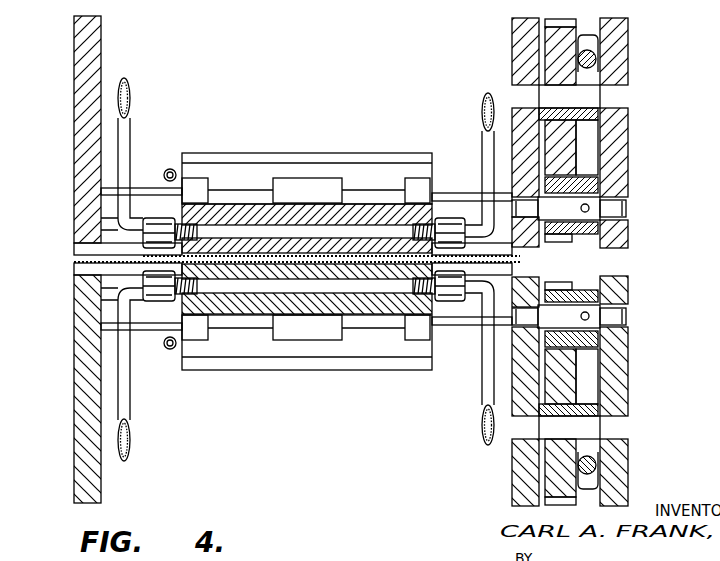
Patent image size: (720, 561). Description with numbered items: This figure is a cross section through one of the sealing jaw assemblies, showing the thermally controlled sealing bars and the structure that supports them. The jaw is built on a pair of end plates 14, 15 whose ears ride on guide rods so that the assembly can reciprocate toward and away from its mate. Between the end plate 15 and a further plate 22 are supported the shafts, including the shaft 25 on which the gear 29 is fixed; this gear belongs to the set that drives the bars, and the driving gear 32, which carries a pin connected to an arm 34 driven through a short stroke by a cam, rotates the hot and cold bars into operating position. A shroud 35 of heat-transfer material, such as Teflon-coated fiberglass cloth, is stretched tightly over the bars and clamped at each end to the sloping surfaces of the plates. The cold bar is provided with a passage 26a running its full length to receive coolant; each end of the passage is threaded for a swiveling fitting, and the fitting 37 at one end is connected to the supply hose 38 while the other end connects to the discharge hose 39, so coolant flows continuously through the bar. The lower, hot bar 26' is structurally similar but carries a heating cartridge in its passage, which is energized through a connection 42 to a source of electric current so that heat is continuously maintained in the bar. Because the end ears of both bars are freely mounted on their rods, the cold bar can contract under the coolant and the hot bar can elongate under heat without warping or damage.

The end plate 14 is at (78, 45).
The end plate 15 is at (626, 57).
The plate 22 is at (512, 45).
The shaft 25 is at (628, 208).
The hot bar 26' is at (307, 261).
The passage 26a is at (348, 232).
The gear 29 is at (570, 236).
The driving gear 32 is at (566, 30).
The arm 34 is at (626, 27).
The shroud 35 is at (149, 220).
The swiveling fitting 37 is at (450, 222).
The supply hose 38 is at (484, 141).
The discharge hose 39 is at (129, 126).
The connection 42 is at (362, 0).